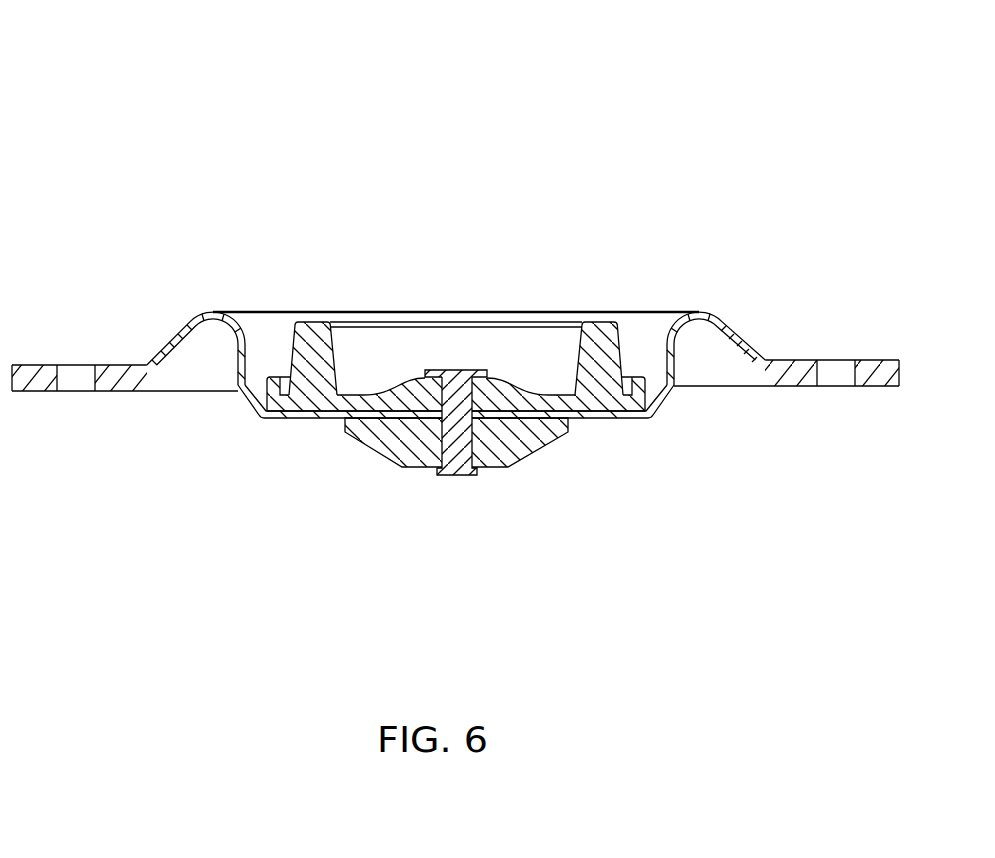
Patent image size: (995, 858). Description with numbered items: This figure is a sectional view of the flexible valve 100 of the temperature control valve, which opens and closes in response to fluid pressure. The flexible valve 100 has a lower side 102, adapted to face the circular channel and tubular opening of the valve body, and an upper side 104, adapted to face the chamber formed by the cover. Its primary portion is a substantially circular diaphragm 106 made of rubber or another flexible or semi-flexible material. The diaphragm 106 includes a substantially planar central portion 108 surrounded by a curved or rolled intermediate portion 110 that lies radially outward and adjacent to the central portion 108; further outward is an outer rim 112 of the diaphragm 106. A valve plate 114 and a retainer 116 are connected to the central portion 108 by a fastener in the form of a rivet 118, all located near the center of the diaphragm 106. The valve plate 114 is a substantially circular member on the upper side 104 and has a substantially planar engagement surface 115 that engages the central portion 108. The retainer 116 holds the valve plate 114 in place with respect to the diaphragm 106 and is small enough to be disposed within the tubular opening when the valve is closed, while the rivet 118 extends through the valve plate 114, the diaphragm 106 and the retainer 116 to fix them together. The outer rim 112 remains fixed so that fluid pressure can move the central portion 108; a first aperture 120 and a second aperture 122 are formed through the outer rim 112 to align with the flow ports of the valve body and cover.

The flexible valve 100 is at (160, 85).
The lower side 102 is at (260, 422).
The upper side 104 is at (438, 312).
The diaphragm 106 is at (530, 312).
The central portion 108 is at (615, 420).
The intermediate portion 110 is at (203, 312).
The outer rim 112 is at (103, 392).
The valve plate 114 is at (308, 320).
The engagement surface 115 is at (318, 420).
The retainer 116 is at (513, 463).
The rivet 118 is at (458, 475).
The first aperture 120 is at (80, 365).
The second aperture 122 is at (835, 360).